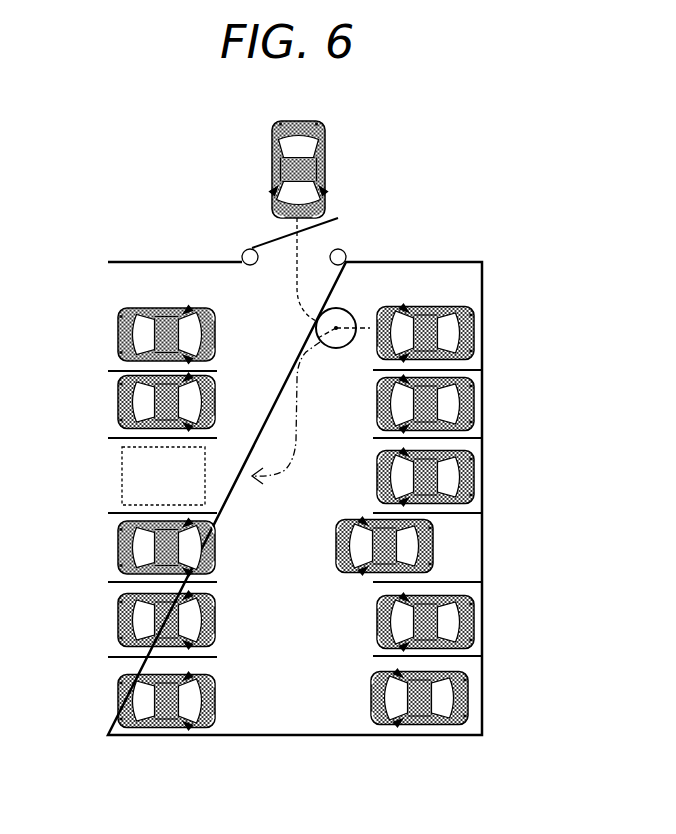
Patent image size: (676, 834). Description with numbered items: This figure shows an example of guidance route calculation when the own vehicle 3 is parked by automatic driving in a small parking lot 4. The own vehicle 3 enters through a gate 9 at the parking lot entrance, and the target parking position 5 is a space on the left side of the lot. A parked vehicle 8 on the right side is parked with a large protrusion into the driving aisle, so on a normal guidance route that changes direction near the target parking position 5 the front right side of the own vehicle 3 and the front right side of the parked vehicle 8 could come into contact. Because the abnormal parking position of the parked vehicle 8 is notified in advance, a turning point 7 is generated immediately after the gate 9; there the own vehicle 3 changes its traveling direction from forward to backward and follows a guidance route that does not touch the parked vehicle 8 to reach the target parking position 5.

The own vehicle 3 is at (290, 160).
The parking lot 4 is at (482, 392).
The target parking position 5 is at (122, 478).
The turning point 7 is at (342, 312).
The parked vehicle 8 is at (366, 548).
The gate 9 is at (346, 250).